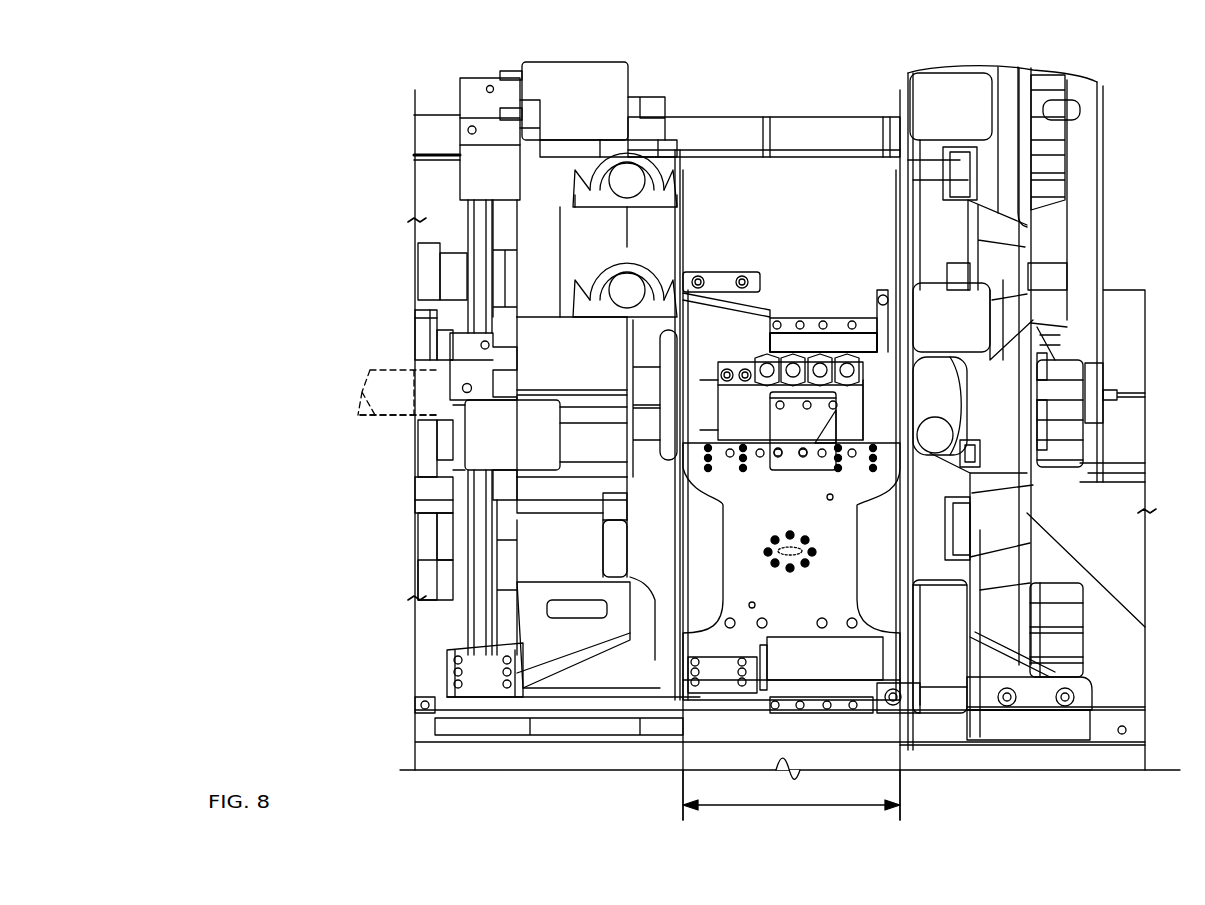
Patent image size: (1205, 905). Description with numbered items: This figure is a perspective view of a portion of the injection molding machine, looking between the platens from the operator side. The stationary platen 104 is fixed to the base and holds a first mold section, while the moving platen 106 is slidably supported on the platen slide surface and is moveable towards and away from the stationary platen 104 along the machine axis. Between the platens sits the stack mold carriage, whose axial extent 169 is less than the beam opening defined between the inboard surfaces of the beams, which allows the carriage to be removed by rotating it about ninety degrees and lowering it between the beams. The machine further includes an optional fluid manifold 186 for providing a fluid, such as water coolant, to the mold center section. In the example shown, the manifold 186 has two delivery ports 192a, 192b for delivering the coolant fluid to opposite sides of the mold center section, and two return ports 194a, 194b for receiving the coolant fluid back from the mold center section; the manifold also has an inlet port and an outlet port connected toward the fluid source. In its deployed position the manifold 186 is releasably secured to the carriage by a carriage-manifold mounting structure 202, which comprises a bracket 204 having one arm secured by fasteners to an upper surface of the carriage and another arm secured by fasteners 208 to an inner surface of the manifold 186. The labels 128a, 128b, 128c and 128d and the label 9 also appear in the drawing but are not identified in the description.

The stationary platen 104 is at (1003, 88).
The moving platen 106 is at (592, 88).
The lower mounting bracket 128a is at (425, 650).
The side mounting bracket 128b is at (404, 362).
The bracket fastener 128c is at (388, 415).
The upper mounting bracket 128d is at (442, 123).
The axial extent 169 is at (763, 807).
The fluid manifold 186 is at (757, 420).
The delivery port 192a is at (845, 356).
The delivery port 192b is at (818, 356).
The return port 194a is at (792, 356).
The return port 194b is at (742, 276).
The carriage-manifold mounting structure 202 is at (795, 478).
The bracket 204 is at (810, 438).
The fasteners 208 is at (835, 425).
The section line 9- 9 is at (883, 292).